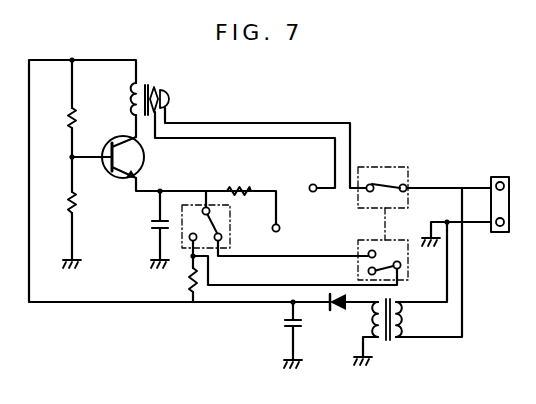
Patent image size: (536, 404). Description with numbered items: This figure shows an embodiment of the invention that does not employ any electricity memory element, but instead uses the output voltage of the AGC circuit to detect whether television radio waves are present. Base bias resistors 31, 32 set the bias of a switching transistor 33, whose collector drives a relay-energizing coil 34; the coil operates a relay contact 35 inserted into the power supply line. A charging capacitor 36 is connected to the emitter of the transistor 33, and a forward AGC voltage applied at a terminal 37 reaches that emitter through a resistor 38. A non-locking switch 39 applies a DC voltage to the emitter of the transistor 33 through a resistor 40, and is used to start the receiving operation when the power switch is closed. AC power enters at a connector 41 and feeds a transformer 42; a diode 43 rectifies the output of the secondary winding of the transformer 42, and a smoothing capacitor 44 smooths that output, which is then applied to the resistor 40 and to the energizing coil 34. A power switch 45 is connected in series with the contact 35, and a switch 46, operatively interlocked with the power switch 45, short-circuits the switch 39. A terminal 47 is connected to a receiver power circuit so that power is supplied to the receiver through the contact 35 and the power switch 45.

The base bias resistor 31 is at (72, 118).
The base bias resistor 32 is at (67, 220).
The switching transistor 33 is at (143, 156).
The relay-energizing coil 34 is at (133, 92).
The relay contact 35 is at (169, 93).
The charging capacitor 36 is at (152, 224).
The terminal 37 is at (283, 231).
The resistor 38 is at (240, 187).
The non-locking switch 39 is at (231, 215).
The resistor 40 is at (188, 280).
The connector 41 is at (502, 234).
The transformer 42 is at (387, 342).
The diode 43 is at (346, 306).
The smoothing capacitor 44 is at (285, 318).
The power switch 45 is at (409, 171).
The switch 46 is at (409, 257).
The terminal 47 is at (311, 184).